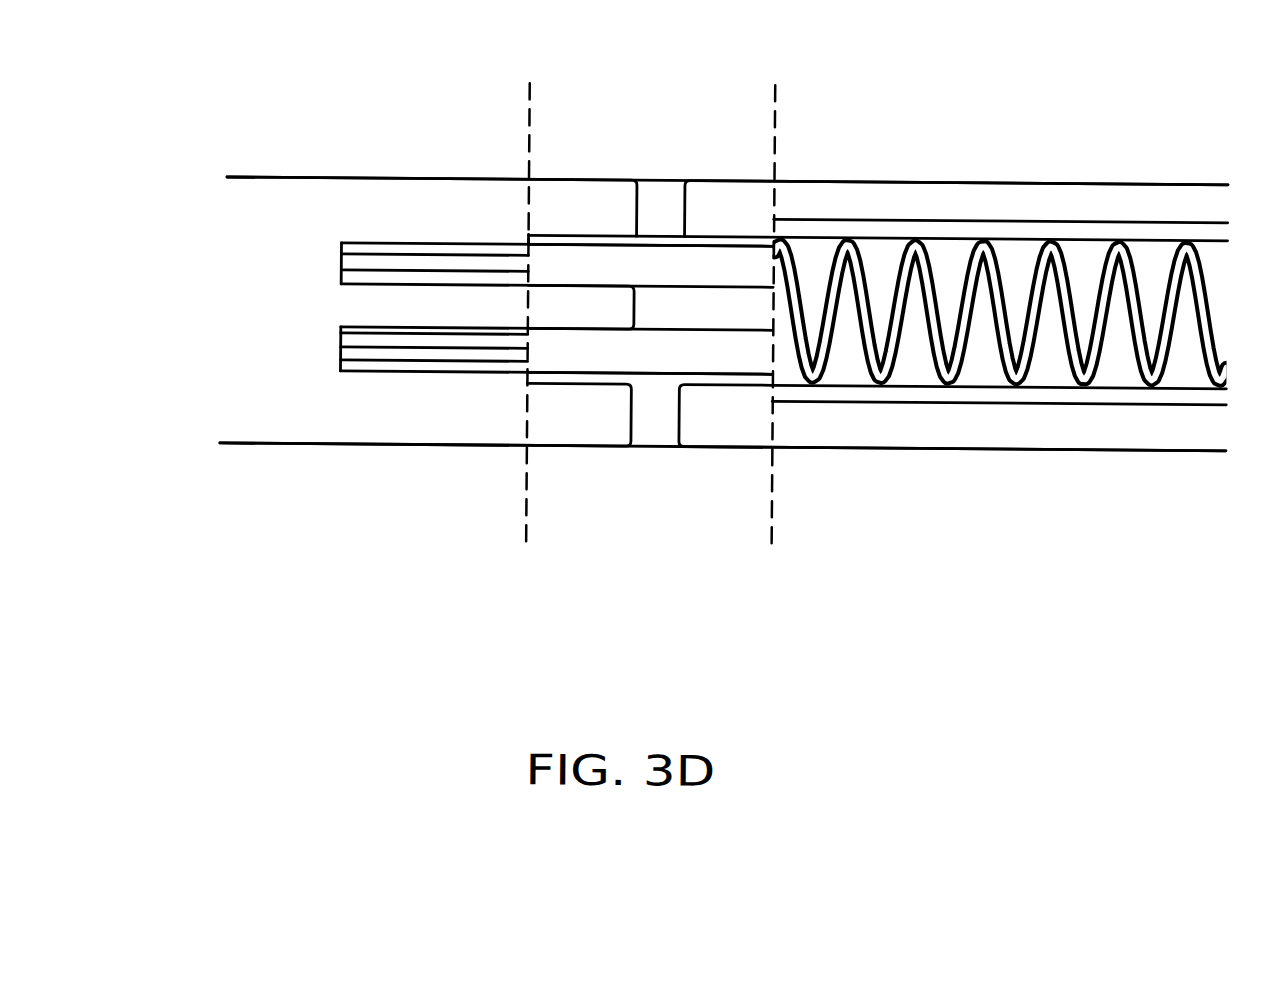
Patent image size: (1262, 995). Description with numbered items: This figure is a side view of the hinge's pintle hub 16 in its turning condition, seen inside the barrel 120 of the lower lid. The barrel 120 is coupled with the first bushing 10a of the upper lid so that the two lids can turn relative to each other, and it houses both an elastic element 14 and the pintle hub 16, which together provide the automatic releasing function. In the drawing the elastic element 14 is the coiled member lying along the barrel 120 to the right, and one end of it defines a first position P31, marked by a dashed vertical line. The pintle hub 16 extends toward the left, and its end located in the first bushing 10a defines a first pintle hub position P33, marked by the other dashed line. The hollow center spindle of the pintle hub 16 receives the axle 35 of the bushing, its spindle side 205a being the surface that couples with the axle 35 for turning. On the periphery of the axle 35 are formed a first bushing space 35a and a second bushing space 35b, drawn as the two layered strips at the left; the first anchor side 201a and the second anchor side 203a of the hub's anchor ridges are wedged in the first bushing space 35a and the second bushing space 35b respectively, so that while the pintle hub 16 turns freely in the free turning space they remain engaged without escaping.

The first bushing 10a is at (417, 206).
The axle 35 is at (465, 372).
The first bushing space 35a is at (343, 250).
The second bushing space 35b is at (345, 360).
The pintle hub 16 is at (622, 392).
The first anchor side 201a is at (700, 239).
The second anchor side 203a is at (687, 374).
The spindle side 205a is at (728, 315).
The elastic element 14 is at (1013, 381).
The barrel 120 is at (1138, 495).
The first pintle hub position P33 is at (526, 287).
The first position P31 is at (775, 288).